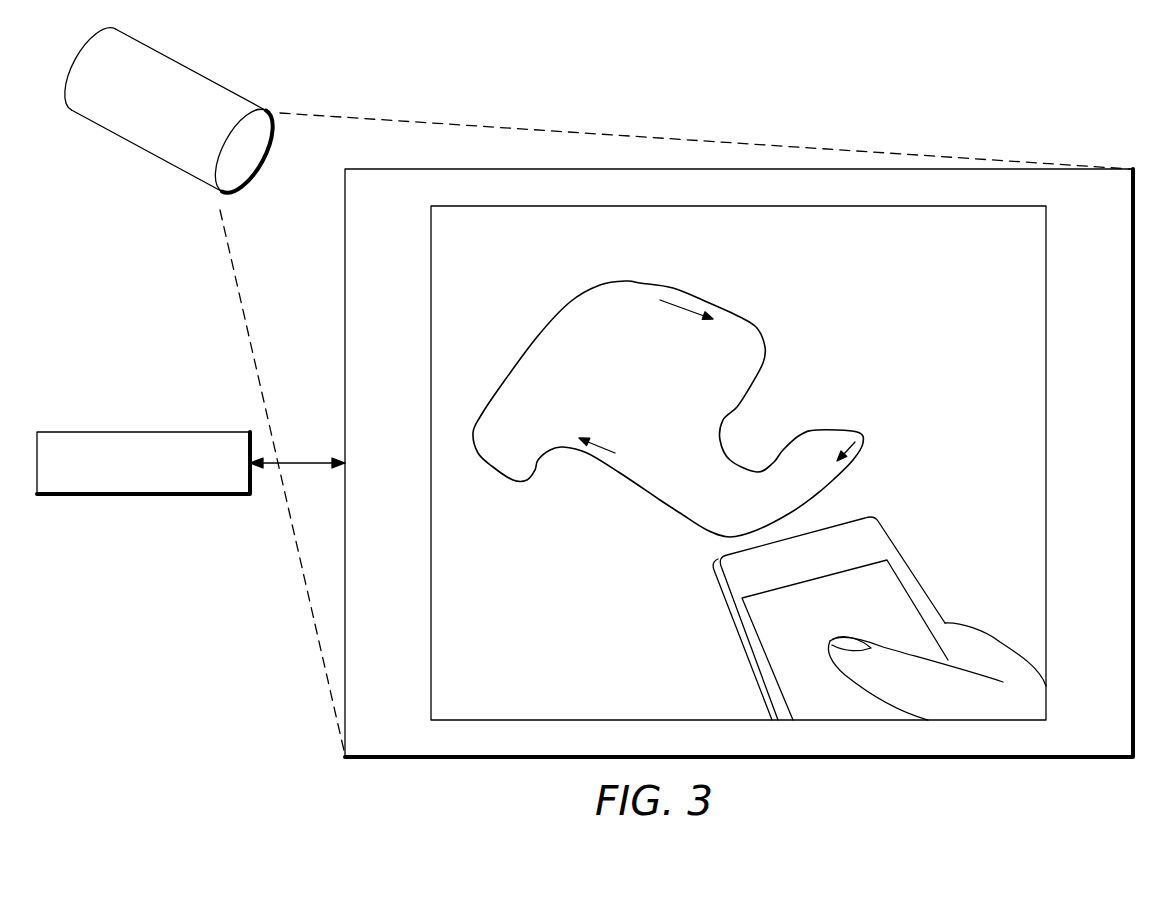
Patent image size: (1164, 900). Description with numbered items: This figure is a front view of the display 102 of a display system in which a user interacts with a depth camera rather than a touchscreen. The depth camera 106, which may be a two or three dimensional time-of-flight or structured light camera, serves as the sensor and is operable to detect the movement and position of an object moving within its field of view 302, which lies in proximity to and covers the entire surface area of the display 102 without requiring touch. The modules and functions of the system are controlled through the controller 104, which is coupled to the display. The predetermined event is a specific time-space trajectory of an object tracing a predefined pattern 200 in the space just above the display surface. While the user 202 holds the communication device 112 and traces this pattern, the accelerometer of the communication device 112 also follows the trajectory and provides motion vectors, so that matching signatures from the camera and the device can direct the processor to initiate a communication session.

The depth camera 106 is at (190, 72).
The controller 104 is at (145, 431).
The display 102 is at (360, 168).
The field of view 302 is at (706, 138).
The predefined pattern 200 is at (757, 327).
The communication device 112 is at (875, 515).
The user 202 is at (993, 633).